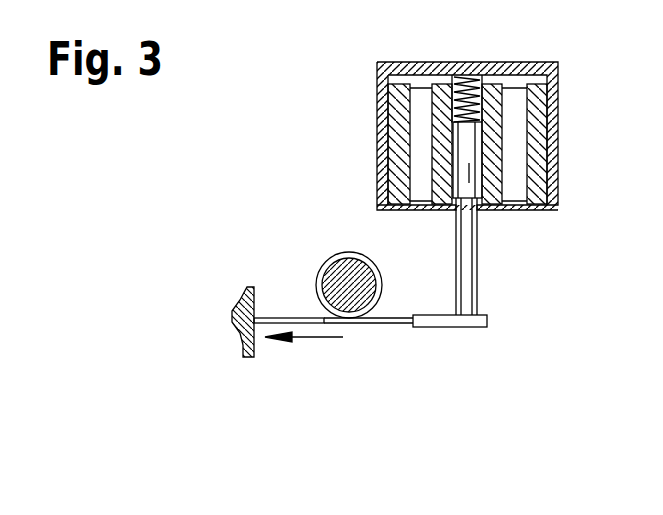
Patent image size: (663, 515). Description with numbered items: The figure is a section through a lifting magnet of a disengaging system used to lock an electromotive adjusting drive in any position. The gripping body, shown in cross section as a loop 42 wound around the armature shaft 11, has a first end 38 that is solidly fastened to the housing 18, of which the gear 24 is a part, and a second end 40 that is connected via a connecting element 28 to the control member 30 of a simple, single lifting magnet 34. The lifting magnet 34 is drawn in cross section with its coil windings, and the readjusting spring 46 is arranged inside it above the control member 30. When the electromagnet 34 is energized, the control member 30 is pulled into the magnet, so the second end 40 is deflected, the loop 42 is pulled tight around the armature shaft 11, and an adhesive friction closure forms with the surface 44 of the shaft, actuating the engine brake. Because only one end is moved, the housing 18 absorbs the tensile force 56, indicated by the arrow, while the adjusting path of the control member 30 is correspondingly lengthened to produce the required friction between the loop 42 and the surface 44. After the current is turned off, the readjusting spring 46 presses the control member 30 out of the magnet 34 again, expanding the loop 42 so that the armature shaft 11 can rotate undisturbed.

The armature shaft 11 is at (377, 271).
The housing 18 is at (233, 306).
The gear 24 is at (243, 322).
The connecting elements 28 is at (485, 317).
The control member 30 is at (468, 265).
The lifting magnet 34 is at (390, 100).
The first end 38 is at (287, 317).
The second end 40 is at (393, 324).
The loop 42 is at (338, 258).
The surface 44 is at (327, 268).
The readjusting spring 46 is at (453, 77).
The tensile force 56 is at (313, 340).